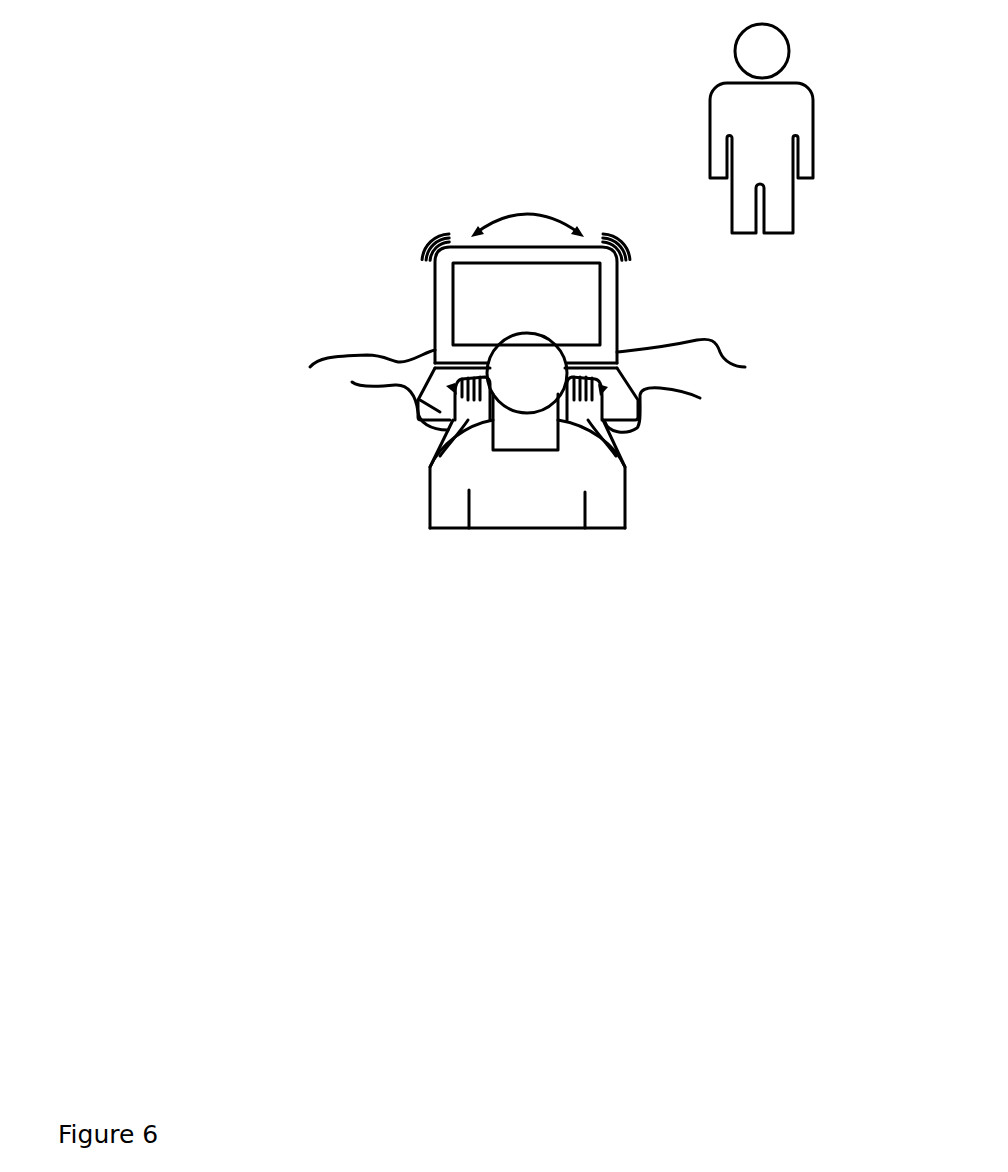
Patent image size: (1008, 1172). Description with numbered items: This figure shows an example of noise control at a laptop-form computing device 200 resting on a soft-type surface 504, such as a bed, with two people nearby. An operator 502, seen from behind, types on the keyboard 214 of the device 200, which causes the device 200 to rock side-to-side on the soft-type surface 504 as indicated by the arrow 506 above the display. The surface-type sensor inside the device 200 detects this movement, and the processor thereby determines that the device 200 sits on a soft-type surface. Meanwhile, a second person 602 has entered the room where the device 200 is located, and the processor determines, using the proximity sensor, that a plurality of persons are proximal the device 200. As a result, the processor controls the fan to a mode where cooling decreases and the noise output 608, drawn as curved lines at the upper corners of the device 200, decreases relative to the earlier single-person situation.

The device 200 is at (437, 313).
The keyboard 214 is at (452, 394).
The operator 502 is at (628, 492).
The soft-type surface 504 is at (713, 342).
The arrow 506 is at (505, 214).
The second person 602 is at (810, 88).
The noise output 608 is at (428, 242).